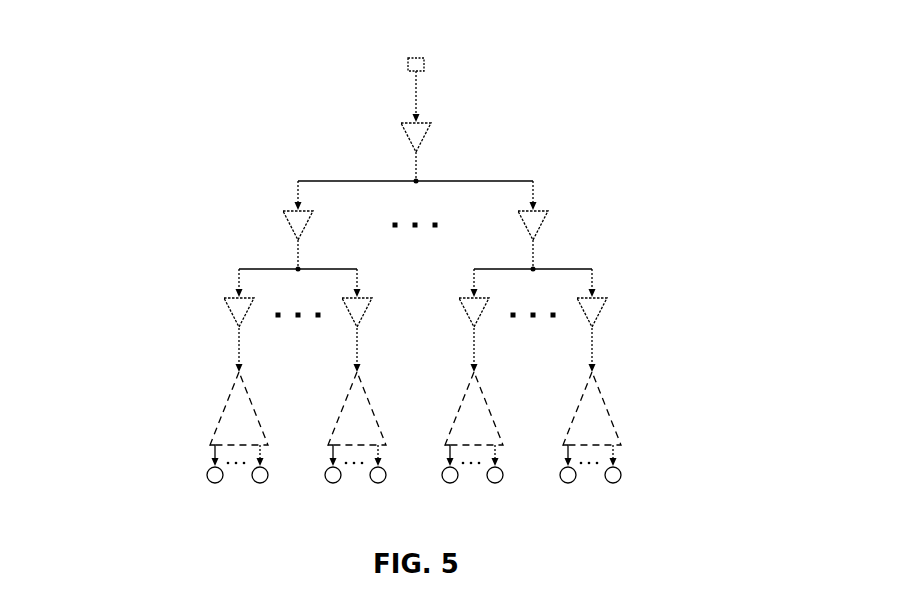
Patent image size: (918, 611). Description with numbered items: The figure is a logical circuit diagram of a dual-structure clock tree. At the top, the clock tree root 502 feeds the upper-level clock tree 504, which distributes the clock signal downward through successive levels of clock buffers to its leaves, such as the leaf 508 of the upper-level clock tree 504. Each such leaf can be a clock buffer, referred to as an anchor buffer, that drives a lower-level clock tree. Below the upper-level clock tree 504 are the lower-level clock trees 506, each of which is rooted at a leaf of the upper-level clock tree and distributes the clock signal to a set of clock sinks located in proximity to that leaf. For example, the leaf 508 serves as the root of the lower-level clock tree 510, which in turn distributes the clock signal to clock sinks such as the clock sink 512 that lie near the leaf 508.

The clock tree root 502 is at (416, 38).
The upper-level clock tree 504 is at (180, 332).
The lower-level clock trees 506 is at (180, 460).
The leaf of upper-level clock tree 508 is at (605, 310).
The lower-level clock tree 510 is at (615, 430).
The clock sink 512 is at (621, 478).